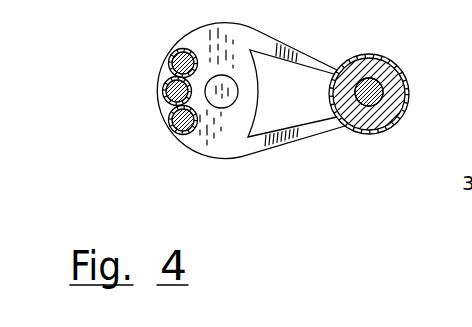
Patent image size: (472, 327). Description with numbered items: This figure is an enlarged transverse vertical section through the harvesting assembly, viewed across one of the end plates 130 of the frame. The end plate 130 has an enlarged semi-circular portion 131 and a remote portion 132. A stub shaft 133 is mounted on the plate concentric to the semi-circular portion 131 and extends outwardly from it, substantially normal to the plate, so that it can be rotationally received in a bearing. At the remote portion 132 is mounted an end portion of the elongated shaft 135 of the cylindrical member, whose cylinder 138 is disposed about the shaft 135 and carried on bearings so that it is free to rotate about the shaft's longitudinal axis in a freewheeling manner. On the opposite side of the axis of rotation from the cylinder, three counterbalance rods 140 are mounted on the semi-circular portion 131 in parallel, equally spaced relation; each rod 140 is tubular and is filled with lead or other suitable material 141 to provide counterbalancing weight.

The end plate 130 is at (258, 102).
The semi-circular portion 131 is at (189, 151).
The remote portion 132 is at (395, 108).
The stub shaft 133 is at (220, 79).
The elongated shaft 135 is at (370, 100).
The cylinder 138 is at (403, 118).
The counterbalance rod 140 is at (126, 99).
The lead or other suitable material 141 is at (170, 58).